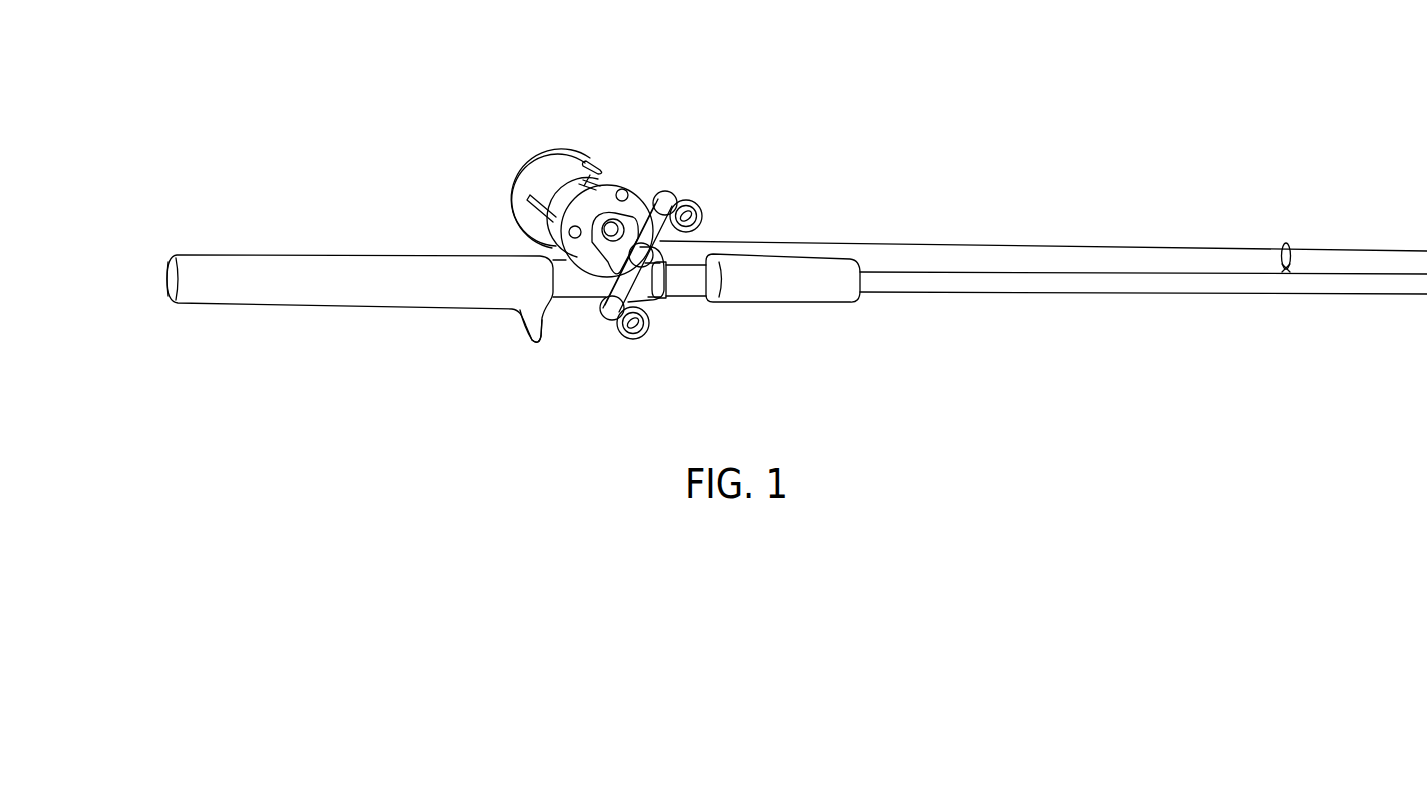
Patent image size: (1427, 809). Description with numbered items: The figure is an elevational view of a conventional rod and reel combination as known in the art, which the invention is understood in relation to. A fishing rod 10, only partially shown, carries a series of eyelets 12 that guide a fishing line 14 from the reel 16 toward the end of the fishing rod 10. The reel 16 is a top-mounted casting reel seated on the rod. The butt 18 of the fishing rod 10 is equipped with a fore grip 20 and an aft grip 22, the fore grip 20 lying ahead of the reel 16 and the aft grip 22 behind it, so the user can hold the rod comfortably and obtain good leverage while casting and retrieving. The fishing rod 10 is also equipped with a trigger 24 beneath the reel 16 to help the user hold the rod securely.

The fishing rod 10 is at (808, 89).
The eyelets 12 is at (1288, 243).
The fishing line 14 is at (990, 242).
The reel 16 is at (542, 156).
The butt 18 is at (175, 256).
The fore grip 20 is at (792, 305).
The aft grip 22 is at (358, 256).
The trigger 24 is at (532, 338).